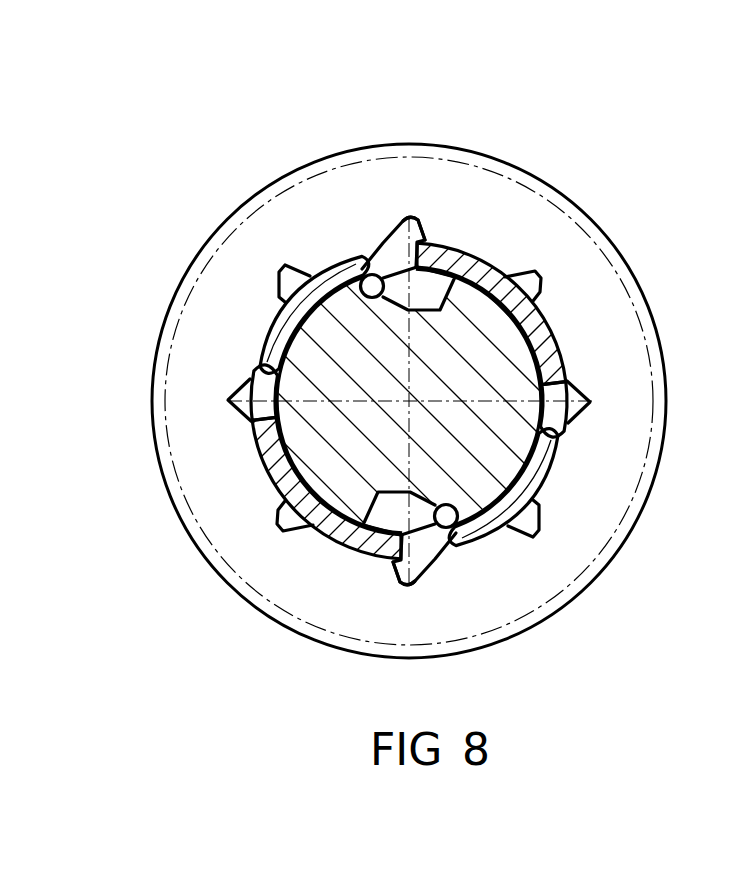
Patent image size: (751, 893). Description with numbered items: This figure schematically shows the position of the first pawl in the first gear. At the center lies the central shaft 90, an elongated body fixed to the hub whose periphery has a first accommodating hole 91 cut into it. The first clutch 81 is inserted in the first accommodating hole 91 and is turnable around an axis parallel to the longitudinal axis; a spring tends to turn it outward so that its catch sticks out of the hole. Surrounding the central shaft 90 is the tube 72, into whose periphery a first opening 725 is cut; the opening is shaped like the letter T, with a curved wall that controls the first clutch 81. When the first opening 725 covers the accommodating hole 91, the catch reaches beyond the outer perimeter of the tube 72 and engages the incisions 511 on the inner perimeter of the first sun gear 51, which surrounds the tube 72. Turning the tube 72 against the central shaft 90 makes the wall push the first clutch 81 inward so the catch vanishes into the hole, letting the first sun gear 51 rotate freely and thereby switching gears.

The first sun gear 51 is at (566, 229).
The incisions 511 is at (424, 226).
The tube 72 is at (278, 333).
The first opening 725 is at (353, 241).
The first clutch 81 is at (395, 257).
The central shaft 90 is at (309, 437).
The first accommodating hole 91 is at (423, 300).